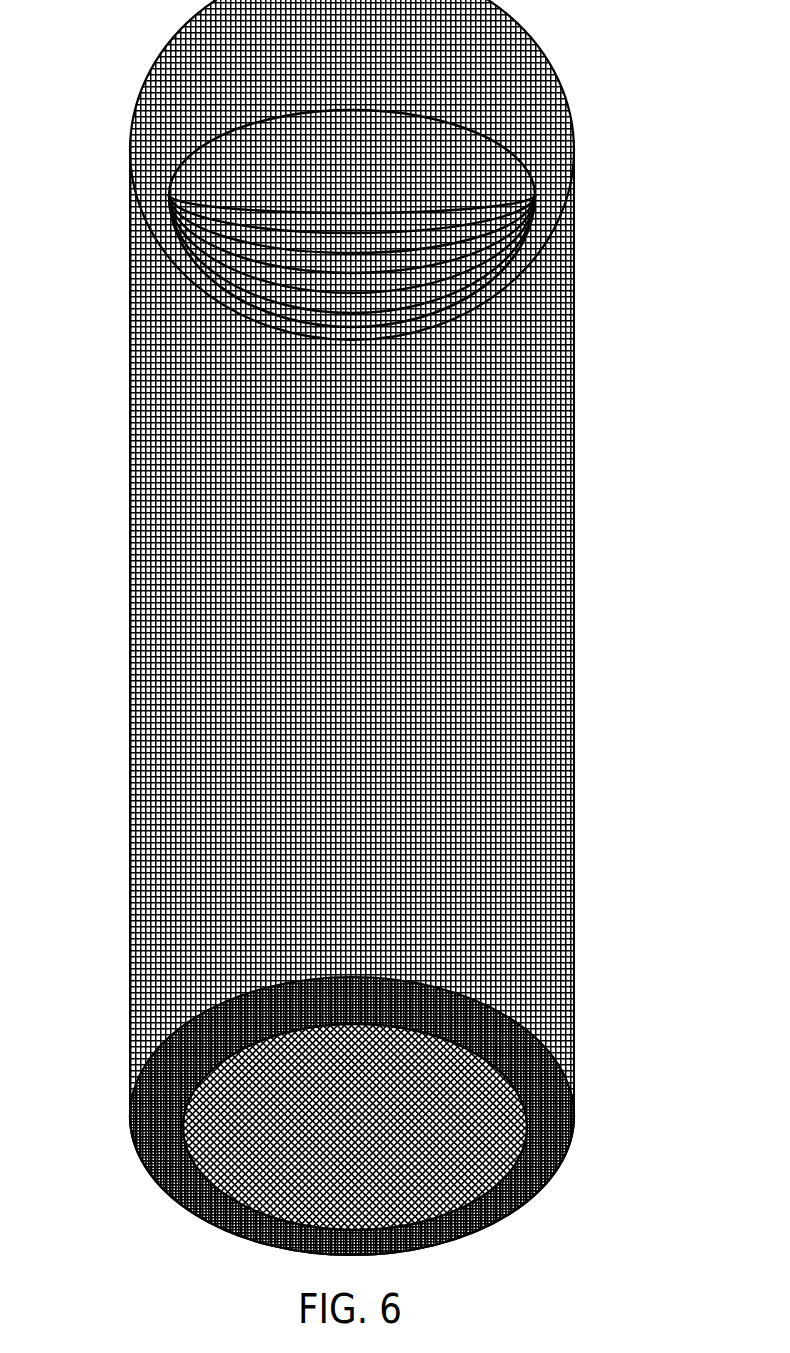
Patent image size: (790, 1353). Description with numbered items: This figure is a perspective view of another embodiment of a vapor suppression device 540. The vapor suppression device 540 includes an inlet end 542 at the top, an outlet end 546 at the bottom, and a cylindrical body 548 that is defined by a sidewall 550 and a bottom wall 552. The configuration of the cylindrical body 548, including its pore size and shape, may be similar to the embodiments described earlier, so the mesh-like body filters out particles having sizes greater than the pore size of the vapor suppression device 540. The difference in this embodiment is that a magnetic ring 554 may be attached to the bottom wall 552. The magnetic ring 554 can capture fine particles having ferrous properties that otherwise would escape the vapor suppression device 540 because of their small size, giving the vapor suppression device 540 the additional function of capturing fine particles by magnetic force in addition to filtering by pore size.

The vapor suppression device 540 is at (615, 542).
The inlet end 542 is at (257, 167).
The outlet end 546 is at (128, 1055).
The cylindrical body 548 is at (188, 690).
The sidewall 550 is at (575, 718).
The bottom wall 552 is at (557, 1177).
The magnetic ring 554 is at (457, 1238).